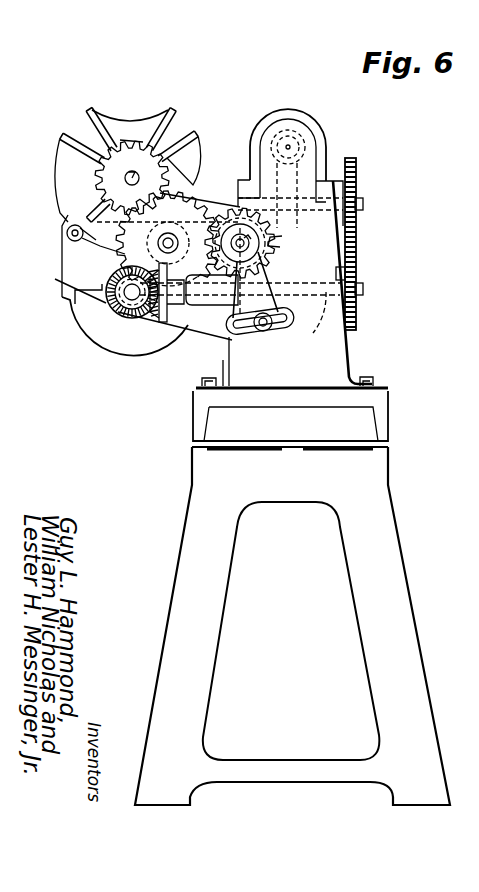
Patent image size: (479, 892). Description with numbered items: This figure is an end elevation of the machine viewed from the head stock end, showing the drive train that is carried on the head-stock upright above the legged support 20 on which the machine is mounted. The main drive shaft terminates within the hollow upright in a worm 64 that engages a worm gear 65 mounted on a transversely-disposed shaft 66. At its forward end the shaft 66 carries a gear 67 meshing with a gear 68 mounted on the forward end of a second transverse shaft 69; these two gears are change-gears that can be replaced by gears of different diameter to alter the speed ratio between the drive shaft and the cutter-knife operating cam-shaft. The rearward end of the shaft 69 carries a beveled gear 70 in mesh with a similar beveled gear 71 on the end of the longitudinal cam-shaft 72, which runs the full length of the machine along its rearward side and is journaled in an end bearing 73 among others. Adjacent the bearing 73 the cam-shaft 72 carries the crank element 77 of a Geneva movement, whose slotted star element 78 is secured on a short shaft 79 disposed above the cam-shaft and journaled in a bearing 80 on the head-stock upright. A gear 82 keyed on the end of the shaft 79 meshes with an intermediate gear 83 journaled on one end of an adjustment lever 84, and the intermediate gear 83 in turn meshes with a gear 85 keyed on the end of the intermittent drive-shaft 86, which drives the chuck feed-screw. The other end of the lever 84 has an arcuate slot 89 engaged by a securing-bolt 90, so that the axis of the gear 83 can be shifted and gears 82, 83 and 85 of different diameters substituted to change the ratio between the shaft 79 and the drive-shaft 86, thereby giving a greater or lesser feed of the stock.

The legged support 20 is at (375, 413).
The worm 64 is at (308, 127).
The worm gear 65 is at (322, 160).
The transversely-disposed shaft 66 is at (356, 164).
The gear 67 is at (362, 183).
The gear 68 is at (363, 316).
The transverse shaft 69 is at (320, 330).
The beveled gear 70 is at (158, 318).
The beveled gear 71 is at (130, 308).
The cam-shaft 72 is at (125, 295).
The end bearing 73 is at (203, 339).
The crank element 77 is at (73, 272).
The slotted star element 78 is at (82, 177).
The short shaft 79 is at (108, 172).
The bearing 80 is at (207, 199).
The gear 82 is at (131, 149).
The intermediate gear 83 is at (72, 262).
The adjustment lever 84 is at (272, 320).
The gear 85 is at (283, 241).
The intermittent drive-shaft 86 is at (246, 252).
The arcuate slot 89 is at (285, 330).
The securing-bolt 90 is at (260, 332).